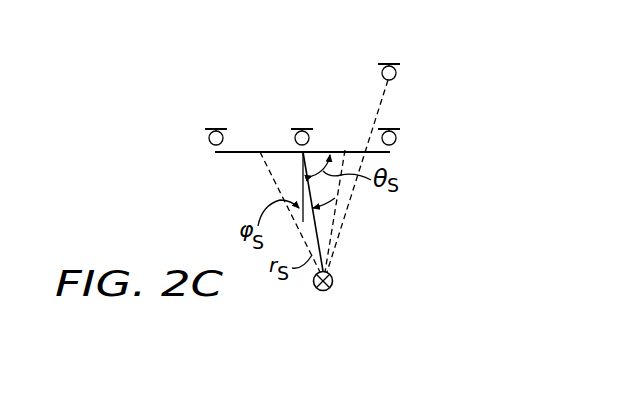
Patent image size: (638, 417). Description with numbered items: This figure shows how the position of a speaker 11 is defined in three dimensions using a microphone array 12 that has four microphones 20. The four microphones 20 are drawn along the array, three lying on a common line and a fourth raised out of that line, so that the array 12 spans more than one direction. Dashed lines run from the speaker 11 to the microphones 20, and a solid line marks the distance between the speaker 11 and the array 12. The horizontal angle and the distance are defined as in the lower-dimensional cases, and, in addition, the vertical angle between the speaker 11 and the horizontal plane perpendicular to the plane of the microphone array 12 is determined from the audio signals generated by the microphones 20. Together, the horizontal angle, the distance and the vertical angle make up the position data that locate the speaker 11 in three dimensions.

The microphone array 12 is at (198, 157).
The microphone 20 is at (219, 128).
The speaker 11 is at (323, 291).